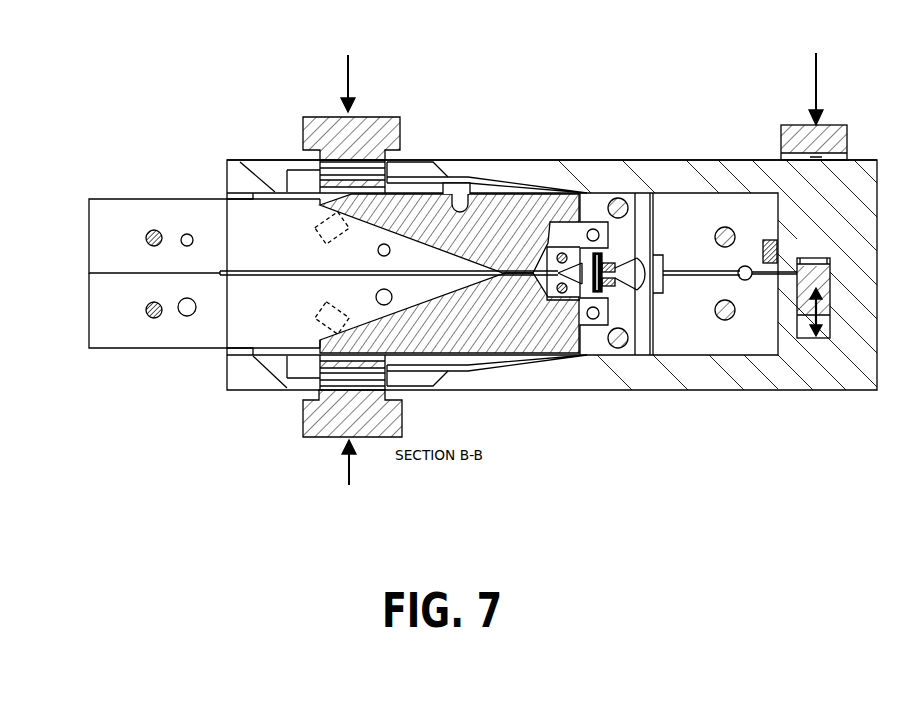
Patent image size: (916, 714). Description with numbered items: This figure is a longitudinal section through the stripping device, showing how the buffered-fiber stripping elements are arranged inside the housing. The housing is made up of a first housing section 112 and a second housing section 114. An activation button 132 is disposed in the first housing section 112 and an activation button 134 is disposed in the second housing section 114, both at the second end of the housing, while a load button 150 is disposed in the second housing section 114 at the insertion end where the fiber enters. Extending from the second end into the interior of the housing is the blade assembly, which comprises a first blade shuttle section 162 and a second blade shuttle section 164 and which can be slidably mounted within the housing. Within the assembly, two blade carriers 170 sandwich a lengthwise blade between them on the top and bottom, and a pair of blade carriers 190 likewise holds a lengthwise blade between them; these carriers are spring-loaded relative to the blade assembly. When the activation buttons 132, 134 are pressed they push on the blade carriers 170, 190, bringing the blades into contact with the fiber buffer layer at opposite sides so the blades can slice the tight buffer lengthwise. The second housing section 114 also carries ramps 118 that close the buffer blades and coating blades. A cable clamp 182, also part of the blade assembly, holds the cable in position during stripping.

The first housing section 112 is at (732, 382).
The second housing section 114 is at (642, 172).
The ramps 118 is at (518, 187).
The activation button 132 is at (348, 426).
The activation button 134 is at (348, 130).
The load button 150 is at (802, 132).
The first blade shuttle section 162 is at (212, 198).
The second blade shuttle section 164 is at (212, 335).
The blade carriers 170 is at (518, 335).
The cable clamp 182 is at (827, 313).
The blade carriers 190 is at (573, 218).